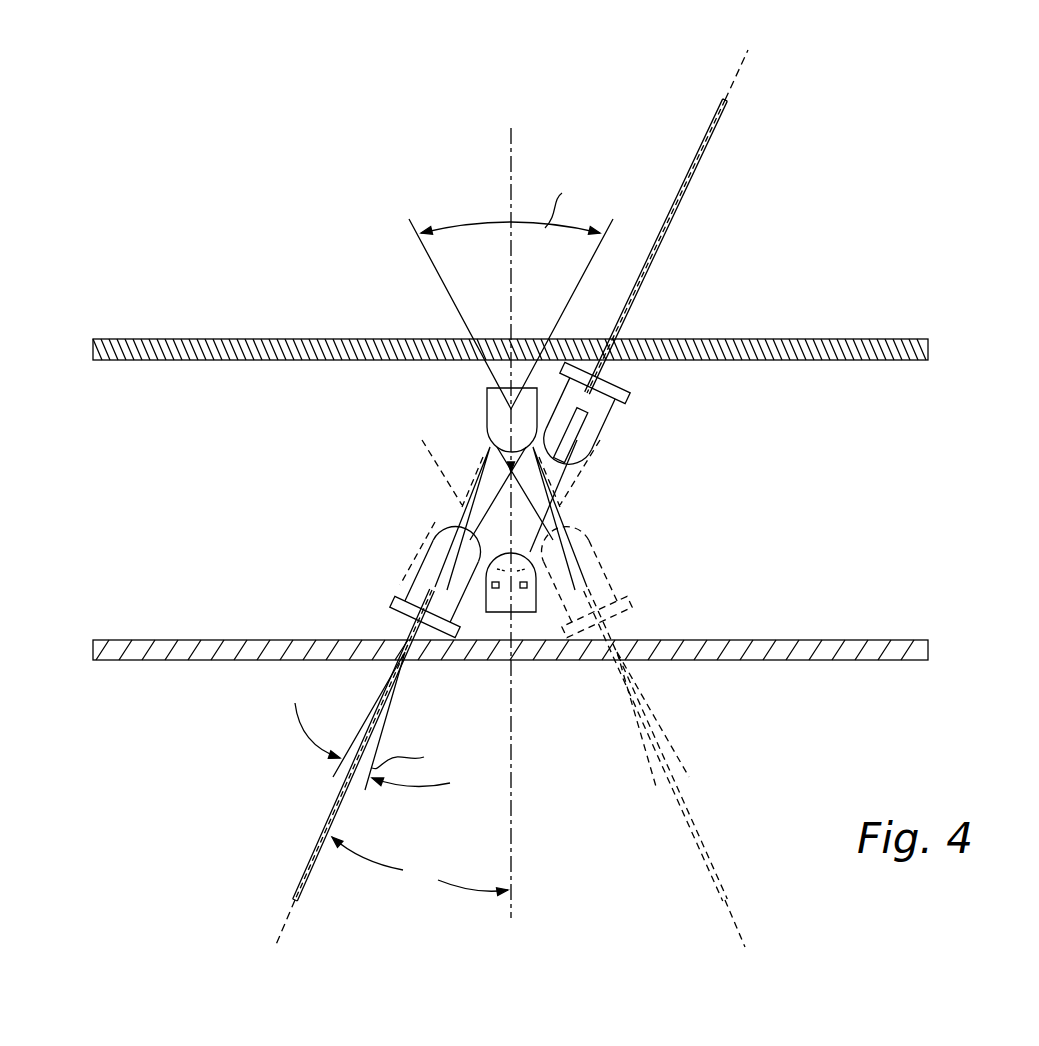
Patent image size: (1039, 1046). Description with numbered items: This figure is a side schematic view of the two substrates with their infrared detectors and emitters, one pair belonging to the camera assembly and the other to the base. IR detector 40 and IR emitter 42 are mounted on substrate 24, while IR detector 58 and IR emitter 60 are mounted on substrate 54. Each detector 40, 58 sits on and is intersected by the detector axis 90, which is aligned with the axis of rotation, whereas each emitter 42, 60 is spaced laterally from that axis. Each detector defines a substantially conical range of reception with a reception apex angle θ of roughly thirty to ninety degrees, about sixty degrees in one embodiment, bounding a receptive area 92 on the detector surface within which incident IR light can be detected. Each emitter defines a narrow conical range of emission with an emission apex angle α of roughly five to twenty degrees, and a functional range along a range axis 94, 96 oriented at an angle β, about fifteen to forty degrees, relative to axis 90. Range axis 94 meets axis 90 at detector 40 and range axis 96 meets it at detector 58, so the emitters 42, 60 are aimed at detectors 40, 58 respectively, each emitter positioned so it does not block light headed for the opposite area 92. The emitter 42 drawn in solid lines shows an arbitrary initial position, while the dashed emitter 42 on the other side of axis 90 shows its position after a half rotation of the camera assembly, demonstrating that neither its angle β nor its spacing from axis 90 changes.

The substrate 24 is at (205, 647).
The IR detector 40 is at (521, 614).
The IR emitter 42 is at (413, 582).
The substrate 54 is at (211, 339).
The IR detector 58 is at (487, 393).
The IR emitter 60 is at (611, 414).
The detector axis 90 is at (505, 172).
The receptive area 92 is at (486, 440).
The range axis 94 is at (728, 93).
The range axis 96 is at (285, 917).